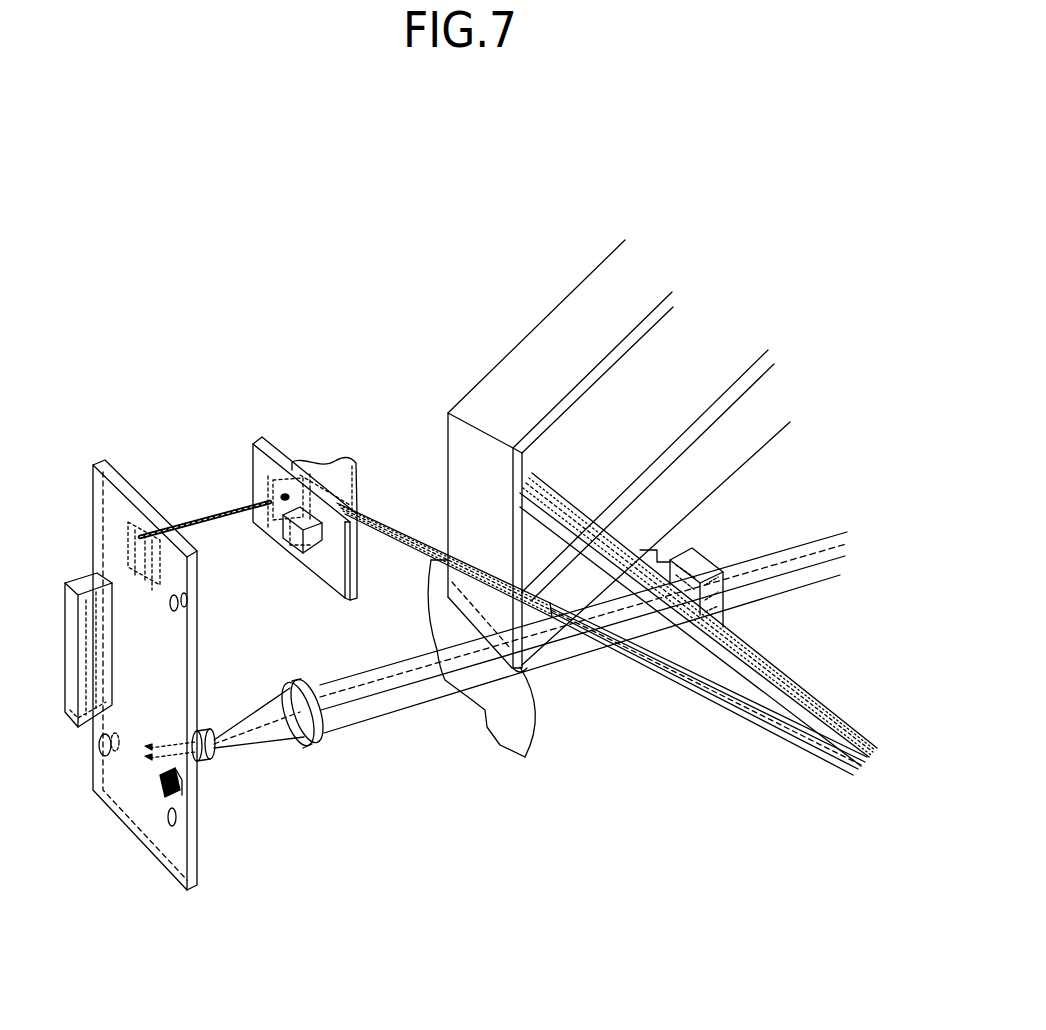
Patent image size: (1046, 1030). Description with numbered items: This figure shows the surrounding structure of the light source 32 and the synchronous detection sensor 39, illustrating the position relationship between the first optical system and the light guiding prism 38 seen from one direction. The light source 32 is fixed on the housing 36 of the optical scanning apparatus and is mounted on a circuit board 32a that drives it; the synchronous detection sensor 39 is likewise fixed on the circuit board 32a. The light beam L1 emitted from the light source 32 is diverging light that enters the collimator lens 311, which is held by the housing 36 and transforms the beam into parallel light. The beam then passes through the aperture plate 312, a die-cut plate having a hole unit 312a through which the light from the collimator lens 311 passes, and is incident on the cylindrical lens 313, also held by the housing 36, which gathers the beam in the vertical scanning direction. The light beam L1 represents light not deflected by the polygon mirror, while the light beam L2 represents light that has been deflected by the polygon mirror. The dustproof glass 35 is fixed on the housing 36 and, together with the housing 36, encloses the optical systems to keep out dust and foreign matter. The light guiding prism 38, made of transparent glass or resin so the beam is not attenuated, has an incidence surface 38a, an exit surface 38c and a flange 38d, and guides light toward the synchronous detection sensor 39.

The light source 32 is at (203, 762).
The circuit board 32a is at (140, 810).
The dustproof glass 35 is at (745, 435).
The housing 36 is at (588, 317).
The light guiding prism 38 is at (299, 497).
The incidence surface 38a is at (358, 482).
The exit surface 38c is at (268, 485).
The flange 38d is at (332, 563).
The synchronous detection sensor 39 is at (113, 512).
The collimator lens 311 is at (312, 747).
The aperture plate 312 is at (523, 674).
The hole unit 312a is at (497, 770).
The cylindrical lens 313 is at (707, 553).
The light beam L1 is at (388, 720).
The light beam L2 is at (700, 700).